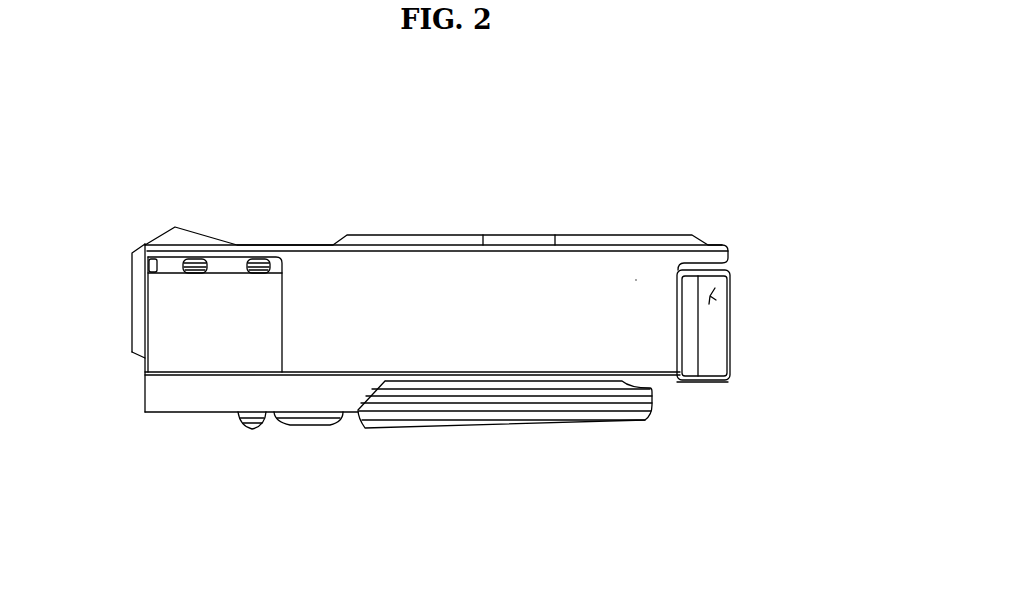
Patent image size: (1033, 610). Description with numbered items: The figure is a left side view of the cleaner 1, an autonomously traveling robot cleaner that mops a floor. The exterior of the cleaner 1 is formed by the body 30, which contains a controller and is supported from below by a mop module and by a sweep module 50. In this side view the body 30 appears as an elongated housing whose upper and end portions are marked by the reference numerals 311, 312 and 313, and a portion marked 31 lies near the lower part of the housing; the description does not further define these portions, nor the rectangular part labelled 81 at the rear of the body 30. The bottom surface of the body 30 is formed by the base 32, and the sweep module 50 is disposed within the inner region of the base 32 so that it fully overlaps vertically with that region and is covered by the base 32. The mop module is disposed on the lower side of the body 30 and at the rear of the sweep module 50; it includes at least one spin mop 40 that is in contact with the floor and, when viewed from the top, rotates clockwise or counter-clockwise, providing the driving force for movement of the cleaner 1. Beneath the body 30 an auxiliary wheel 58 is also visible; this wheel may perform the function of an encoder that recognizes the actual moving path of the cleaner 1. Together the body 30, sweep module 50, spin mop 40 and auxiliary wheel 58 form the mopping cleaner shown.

The cleaner 1 is at (58, 160).
The body 30 is at (717, 235).
The module body 31 is at (430, 314).
The base 32 is at (327, 427).
The front portion of module body 311 is at (270, 243).
The upper cover of module body 312 is at (636, 280).
The rear portion of module body 313 is at (727, 282).
The spin mop 40 is at (667, 405).
The sweep module 50 is at (228, 427).
The auxiliary wheel 58 is at (257, 433).
The water tank 81 is at (738, 335).